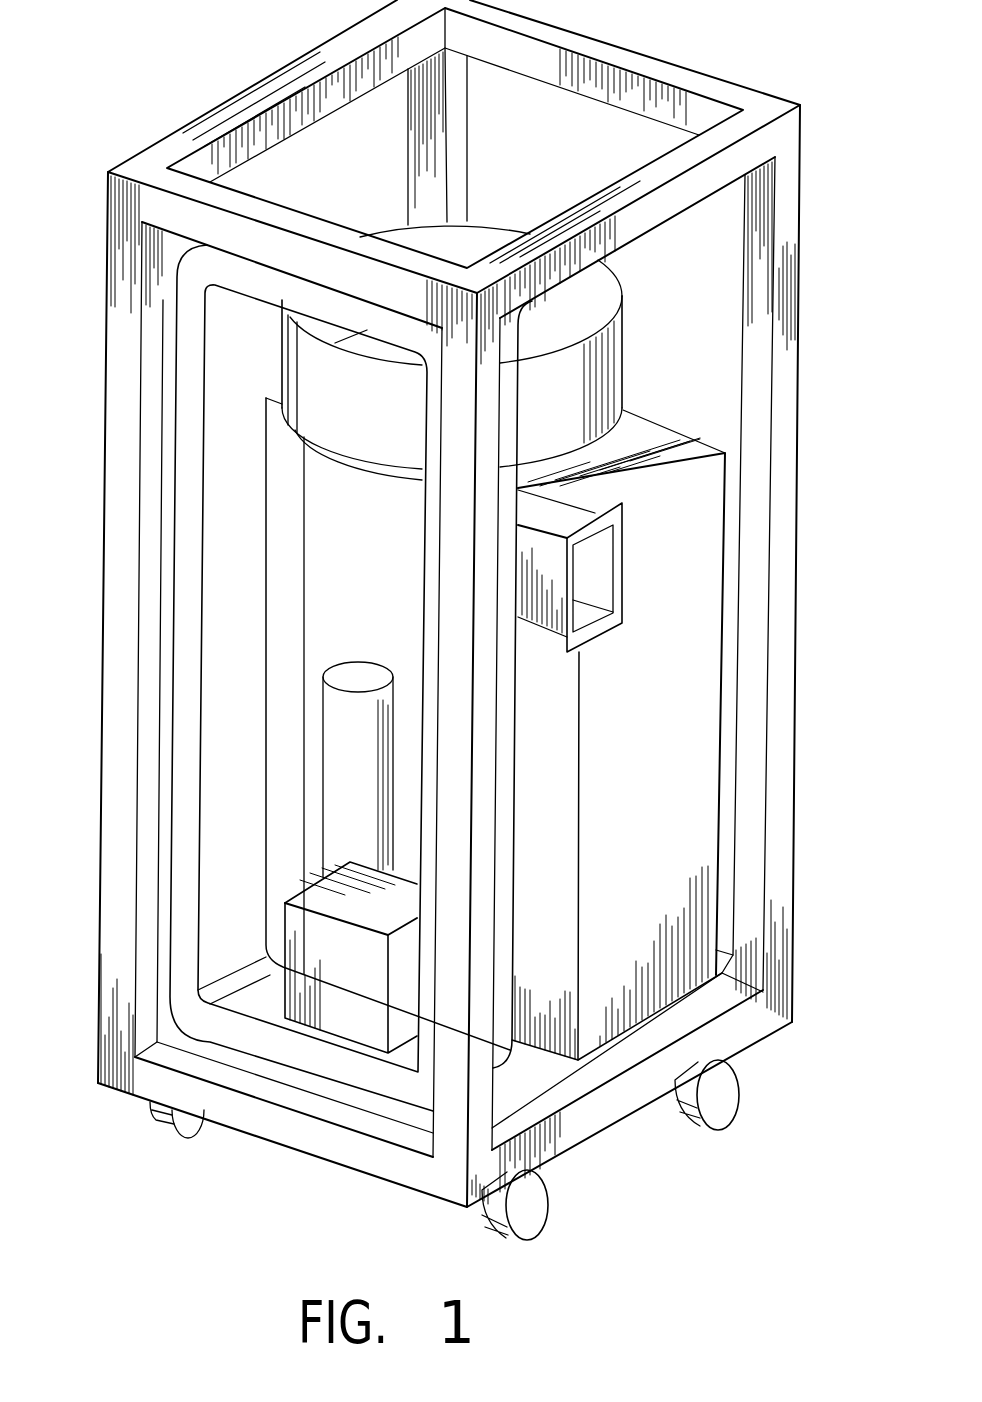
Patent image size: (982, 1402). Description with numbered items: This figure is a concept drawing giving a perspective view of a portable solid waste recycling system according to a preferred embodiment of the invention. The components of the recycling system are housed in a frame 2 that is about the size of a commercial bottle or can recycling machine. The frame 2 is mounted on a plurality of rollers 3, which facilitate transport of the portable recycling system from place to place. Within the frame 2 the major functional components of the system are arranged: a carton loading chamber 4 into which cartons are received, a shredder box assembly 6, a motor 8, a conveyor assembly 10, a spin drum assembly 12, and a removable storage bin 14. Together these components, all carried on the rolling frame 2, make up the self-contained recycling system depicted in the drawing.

The frame 2 is at (796, 219).
The rollers 3 is at (730, 1088).
The carton loading chamber 4 is at (600, 573).
The shredder box assembly 6 is at (338, 1015).
The motor 8 is at (396, 697).
The conveyor assembly 10 is at (210, 662).
The spin drum assembly 12 is at (585, 376).
The removable storage bin 14 is at (700, 672).